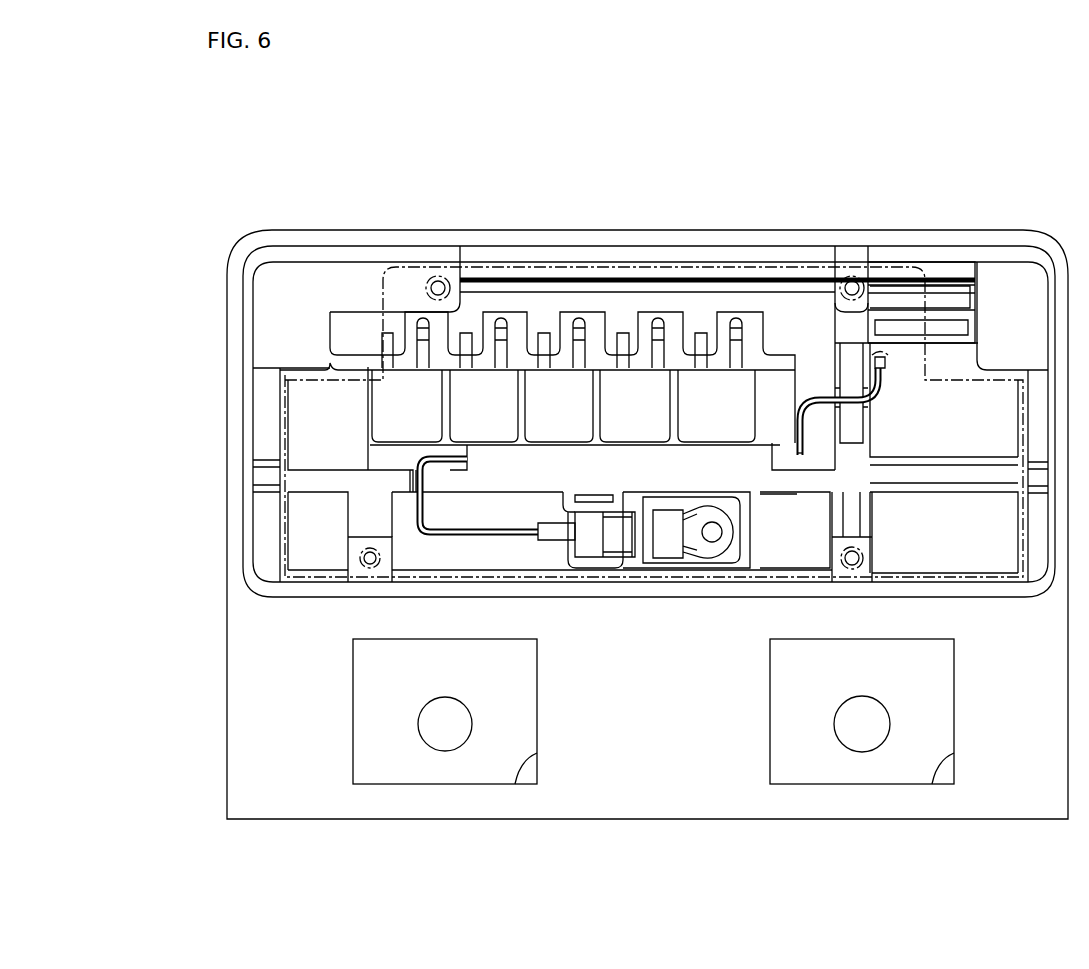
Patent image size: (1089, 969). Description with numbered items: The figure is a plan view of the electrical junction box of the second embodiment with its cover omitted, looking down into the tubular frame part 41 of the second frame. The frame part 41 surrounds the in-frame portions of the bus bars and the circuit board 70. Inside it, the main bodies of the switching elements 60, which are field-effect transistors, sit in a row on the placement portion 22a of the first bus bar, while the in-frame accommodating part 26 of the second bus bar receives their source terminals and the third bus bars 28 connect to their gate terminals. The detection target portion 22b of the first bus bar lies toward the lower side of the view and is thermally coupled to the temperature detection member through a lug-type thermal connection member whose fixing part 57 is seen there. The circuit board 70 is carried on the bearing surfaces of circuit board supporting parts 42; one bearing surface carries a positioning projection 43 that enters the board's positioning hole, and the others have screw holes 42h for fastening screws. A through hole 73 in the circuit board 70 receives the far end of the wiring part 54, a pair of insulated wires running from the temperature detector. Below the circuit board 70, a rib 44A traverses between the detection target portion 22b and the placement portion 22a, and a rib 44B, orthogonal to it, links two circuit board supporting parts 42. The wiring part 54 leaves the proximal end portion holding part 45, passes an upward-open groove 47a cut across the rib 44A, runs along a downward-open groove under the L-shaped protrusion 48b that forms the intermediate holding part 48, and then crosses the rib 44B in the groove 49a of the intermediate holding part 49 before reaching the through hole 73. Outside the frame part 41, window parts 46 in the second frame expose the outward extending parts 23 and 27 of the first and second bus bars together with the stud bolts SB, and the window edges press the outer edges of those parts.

The frame part 41 is at (620, 600).
The placement portion 22a is at (300, 445).
The in-frame accommodating part 26 is at (545, 320).
The third bus bars 28 is at (588, 324).
The circuit board 70 is at (730, 265).
The circuit board supporting part 42 is at (835, 290).
The positioning projection 43 is at (851, 280).
The through hole 73 is at (884, 330).
The intermediate holding part 48 is at (765, 440).
The intermediate holding part 49 is at (833, 398).
The groove 49a is at (880, 403).
The wiring part 54 is at (884, 384).
The switching elements 60 is at (368, 402).
The rib 44A is at (395, 482).
The groove 47a is at (413, 494).
The protrusion 48b is at (547, 468).
The proximal end portion holding part 45 is at (567, 548).
The detection target portion 22b is at (668, 568).
The fixing part 57 is at (722, 563).
The rib 44B is at (830, 520).
The screw hole 42h is at (853, 565).
The outward extending part 23 is at (381, 767).
The outward extending part 27 is at (797, 767).
The stud bolt SB is at (445, 738).
The window parts 46 is at (530, 758).